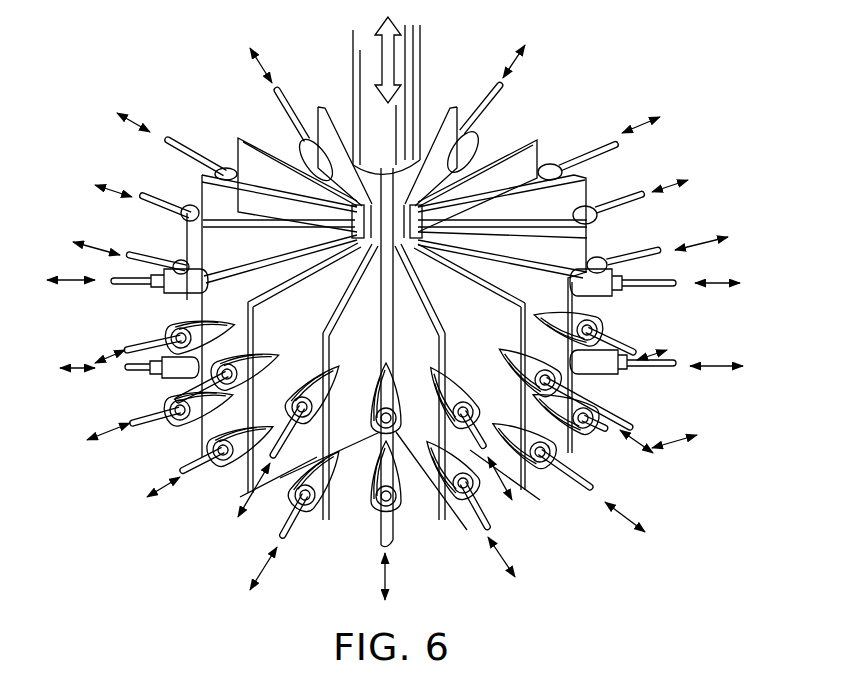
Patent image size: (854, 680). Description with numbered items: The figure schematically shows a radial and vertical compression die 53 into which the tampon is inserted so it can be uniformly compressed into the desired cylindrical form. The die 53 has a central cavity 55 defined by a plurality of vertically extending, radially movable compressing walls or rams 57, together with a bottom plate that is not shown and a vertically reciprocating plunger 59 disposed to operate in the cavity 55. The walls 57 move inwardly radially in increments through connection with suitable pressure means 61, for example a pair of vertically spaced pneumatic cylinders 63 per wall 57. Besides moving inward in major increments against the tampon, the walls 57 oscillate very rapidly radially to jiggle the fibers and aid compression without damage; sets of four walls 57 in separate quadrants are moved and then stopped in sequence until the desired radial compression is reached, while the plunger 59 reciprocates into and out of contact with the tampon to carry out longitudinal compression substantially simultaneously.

The radial and vertical compression die 53 is at (303, 325).
The central cavity 55 is at (466, 136).
The compressing walls 57 is at (573, 207).
The plunger 59 is at (410, 76).
The pressure means 61 is at (182, 326).
The pneumatic cylinders 63 is at (175, 385).